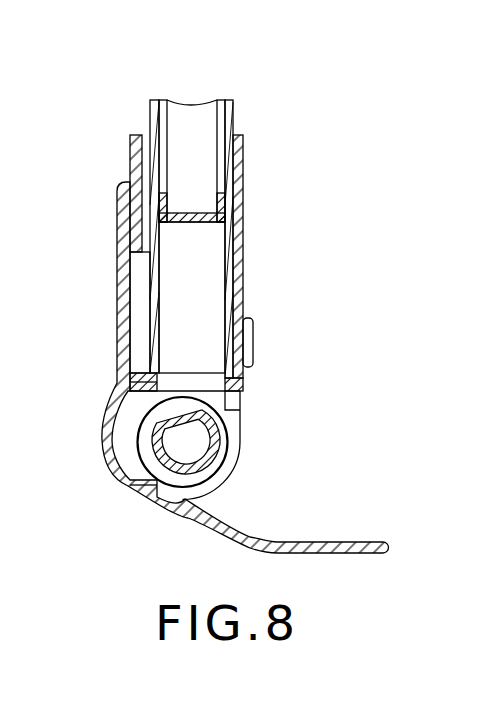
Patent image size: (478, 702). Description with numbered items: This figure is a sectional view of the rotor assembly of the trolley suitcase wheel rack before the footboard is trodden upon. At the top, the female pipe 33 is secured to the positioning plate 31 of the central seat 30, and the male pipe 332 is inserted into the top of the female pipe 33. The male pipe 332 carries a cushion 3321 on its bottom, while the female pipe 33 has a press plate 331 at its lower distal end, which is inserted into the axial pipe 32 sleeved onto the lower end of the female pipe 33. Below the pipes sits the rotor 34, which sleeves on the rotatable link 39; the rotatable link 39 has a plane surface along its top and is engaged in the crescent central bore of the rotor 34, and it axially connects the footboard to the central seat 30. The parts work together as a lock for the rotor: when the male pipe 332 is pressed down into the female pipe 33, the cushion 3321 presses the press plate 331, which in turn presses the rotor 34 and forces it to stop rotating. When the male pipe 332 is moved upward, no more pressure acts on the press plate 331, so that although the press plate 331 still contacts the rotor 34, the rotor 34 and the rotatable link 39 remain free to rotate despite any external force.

The central seat 30 is at (352, 543).
The positioning plate 31 is at (240, 312).
The axial pipe 32 is at (240, 189).
The female pipe 33 is at (235, 113).
The press plate 331 is at (205, 281).
The male pipe 332 is at (203, 159).
The cushion 3321 is at (220, 220).
The rotor 34 is at (233, 433).
The rotatable link 39 is at (220, 455).